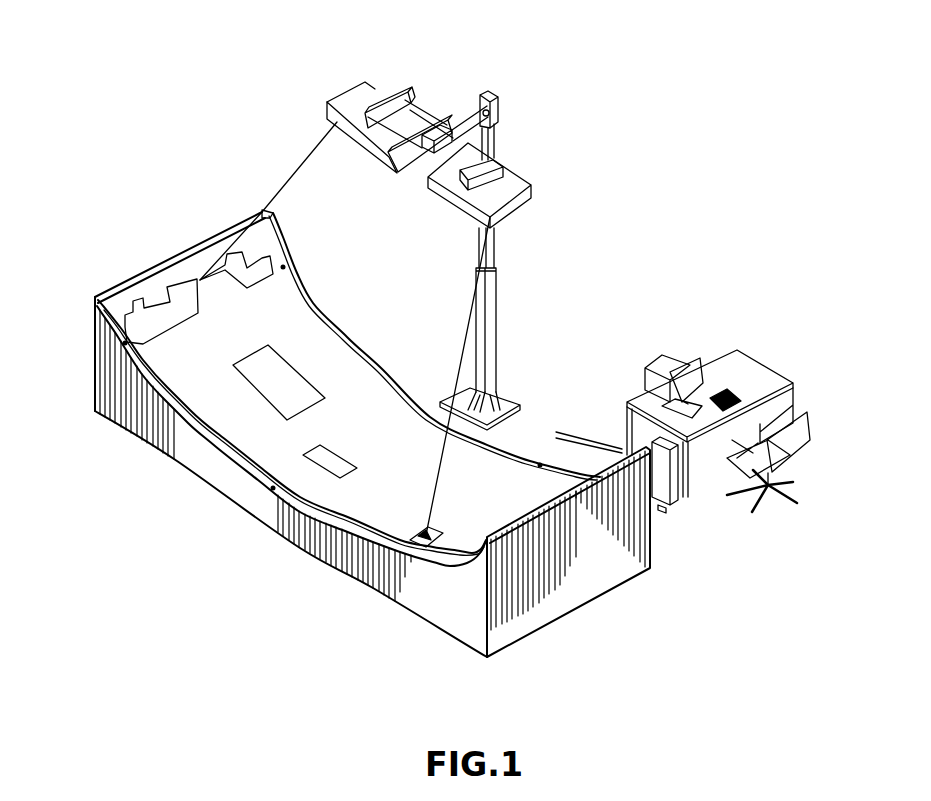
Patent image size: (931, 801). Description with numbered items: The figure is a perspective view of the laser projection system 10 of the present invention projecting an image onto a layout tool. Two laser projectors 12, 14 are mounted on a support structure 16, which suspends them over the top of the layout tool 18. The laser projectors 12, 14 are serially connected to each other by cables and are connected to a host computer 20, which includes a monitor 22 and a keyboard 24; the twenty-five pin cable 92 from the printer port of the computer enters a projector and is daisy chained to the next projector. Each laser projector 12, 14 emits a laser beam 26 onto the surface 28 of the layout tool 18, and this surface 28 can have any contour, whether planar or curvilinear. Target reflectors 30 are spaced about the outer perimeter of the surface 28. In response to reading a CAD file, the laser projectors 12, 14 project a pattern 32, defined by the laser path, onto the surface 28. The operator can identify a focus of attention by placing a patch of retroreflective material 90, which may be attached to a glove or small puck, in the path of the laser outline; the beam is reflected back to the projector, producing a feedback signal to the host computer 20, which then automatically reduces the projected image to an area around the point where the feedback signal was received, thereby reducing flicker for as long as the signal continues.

The laser projection system 10 is at (515, 298).
The laser projector 12 is at (383, 108).
The laser projector 14 is at (522, 206).
The support structure 16 is at (493, 103).
The layout tool 18 is at (580, 567).
The host computer 20 is at (667, 512).
The monitor 22 is at (740, 372).
The keyboard 24 is at (733, 390).
The laser beam 26 is at (300, 163).
The surface 28 is at (110, 330).
The target reflectors 30 is at (257, 482).
The pattern 32 is at (203, 445).
The patch of retroreflective material 90 is at (430, 527).
The 25-pin cable 92 is at (556, 430).